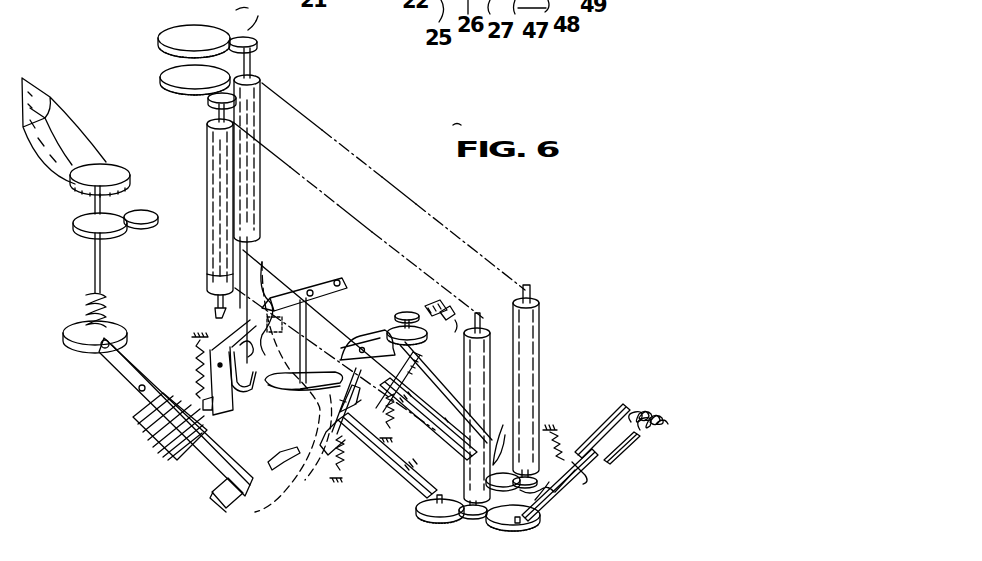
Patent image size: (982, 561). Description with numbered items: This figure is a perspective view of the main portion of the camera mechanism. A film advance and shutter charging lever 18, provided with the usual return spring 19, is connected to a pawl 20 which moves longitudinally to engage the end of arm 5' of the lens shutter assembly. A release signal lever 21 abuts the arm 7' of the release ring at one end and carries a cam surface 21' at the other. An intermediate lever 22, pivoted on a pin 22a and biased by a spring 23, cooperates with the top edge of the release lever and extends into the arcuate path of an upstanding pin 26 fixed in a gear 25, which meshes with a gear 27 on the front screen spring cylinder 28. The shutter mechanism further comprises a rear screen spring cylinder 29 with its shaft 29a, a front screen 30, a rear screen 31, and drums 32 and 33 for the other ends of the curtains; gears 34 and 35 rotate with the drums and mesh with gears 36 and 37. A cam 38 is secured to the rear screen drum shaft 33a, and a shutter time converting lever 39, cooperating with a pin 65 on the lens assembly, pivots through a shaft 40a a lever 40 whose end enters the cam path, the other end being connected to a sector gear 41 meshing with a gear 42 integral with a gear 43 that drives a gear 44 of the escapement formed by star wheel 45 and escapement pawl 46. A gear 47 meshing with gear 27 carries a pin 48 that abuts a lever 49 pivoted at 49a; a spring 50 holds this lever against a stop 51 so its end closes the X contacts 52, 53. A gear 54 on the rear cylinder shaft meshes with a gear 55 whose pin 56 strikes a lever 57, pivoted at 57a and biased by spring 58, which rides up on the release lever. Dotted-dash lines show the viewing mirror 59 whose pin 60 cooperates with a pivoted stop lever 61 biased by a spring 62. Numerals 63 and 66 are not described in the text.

The arm of the lens shutter assembly 5' is at (209, 497).
The arm of the release ring 7' is at (274, 455).
The film advance and shutter charging lever 18 is at (62, 160).
The return spring 19 is at (87, 297).
The pawl 20 is at (245, 500).
The release signal lever 21 is at (308, 399).
The cam surface 21' is at (369, 386).
The intermediate lever 22 is at (400, 491).
The pin 22a is at (403, 472).
The spring 23 is at (344, 483).
The gear 25 is at (430, 521).
The upstanding pin 26 is at (485, 476).
The gear 27 is at (460, 521).
The front screen spring cylinder 28 is at (494, 342).
The rear screen spring cylinder 29 is at (538, 360).
The rear screen spring cylinder shaft 29a is at (533, 292).
The front curtain or screen 30 is at (365, 238).
The rear curtain or screen 31 is at (385, 185).
The drum 32 is at (207, 158).
The drum 33 is at (262, 82).
The rear screen drum shaft 33a is at (207, 272).
The gear 34 is at (208, 108).
The gear 35 is at (258, 40).
The gear 36 is at (178, 86).
The gear 37 is at (214, 30).
The cam 38 is at (252, 388).
The shutter time converting lever 39 is at (284, 295).
The lever 40 is at (286, 390).
The shaft 40a is at (290, 335).
The sector gear 41 is at (364, 332).
The gear 42 is at (425, 340).
The gear 43 is at (403, 312).
The gear 44 is at (429, 306).
The star wheel 45 is at (442, 308).
The escapement pawl 46 is at (458, 323).
The gear 47 is at (508, 523).
The upstanding pin 48 is at (536, 524).
The lever 49 is at (560, 508).
The pivot 49a is at (578, 494).
The spring 50 is at (568, 438).
The stop 51 is at (580, 476).
The electrical contact 52 is at (596, 426).
The electrical contact 53 is at (624, 456).
The gear 54 is at (566, 472).
The gear 55 is at (437, 427).
The pin 56 is at (503, 438).
The lever 57 is at (457, 442).
The pivot 57a is at (454, 416).
The spring 58 is at (404, 423).
The reflecting or viewing mirror 59 is at (336, 482).
The pin 60 is at (261, 356).
The stop lever 61 is at (207, 417).
The spring 62 is at (193, 341).
The part of adjacent figure 63 is at (265, 15).
The pin 65 is at (278, 299).
The part of adjacent figure 66 is at (241, 6).